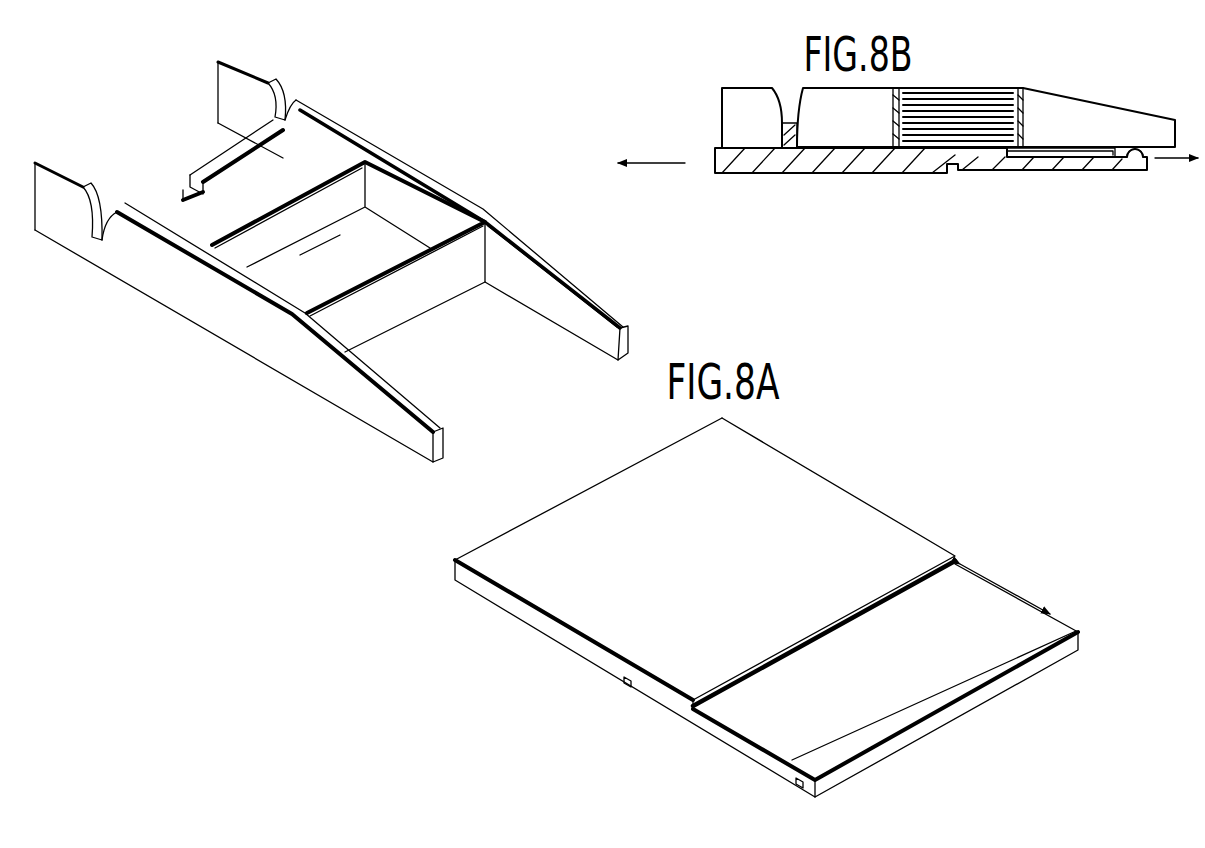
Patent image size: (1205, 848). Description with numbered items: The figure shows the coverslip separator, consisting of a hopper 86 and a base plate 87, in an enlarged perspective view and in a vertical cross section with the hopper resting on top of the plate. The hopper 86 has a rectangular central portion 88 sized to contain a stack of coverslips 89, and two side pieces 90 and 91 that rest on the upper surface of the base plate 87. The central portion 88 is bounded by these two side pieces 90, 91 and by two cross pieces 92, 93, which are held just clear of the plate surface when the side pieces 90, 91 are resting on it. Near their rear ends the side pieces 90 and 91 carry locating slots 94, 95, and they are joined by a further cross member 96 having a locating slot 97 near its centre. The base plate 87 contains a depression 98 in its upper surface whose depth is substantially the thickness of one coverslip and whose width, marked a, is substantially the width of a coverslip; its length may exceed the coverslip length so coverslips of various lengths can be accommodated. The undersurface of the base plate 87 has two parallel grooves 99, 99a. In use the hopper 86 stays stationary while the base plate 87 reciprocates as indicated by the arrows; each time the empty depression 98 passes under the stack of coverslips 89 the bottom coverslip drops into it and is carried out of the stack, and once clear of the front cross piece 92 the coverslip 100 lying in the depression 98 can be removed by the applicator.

In FIG. 8A, the hopper 86 is at (331, 262).
In FIG. 8B, the hopper 86 is at (948, 97).
In FIG. 8A, the base plate 87 is at (541, 643).
In FIG. 8B, the base plate 87 is at (1078, 164).
In FIG. 8A, the rectangular central portion 88 is at (380, 232).
In FIG. 8B, the stack of coverslips 89 is at (952, 110).
In FIG. 8A, the side piece 90 is at (568, 291).
In FIG. 8A, the side piece 91 is at (328, 384).
In FIG. 8A, the cross piece 92 is at (466, 248).
In FIG. 8A, the cross piece 93 is at (350, 182).
In FIG. 8A, the locating slot 94 is at (290, 103).
In FIG. 8A, the locating slot 95 is at (100, 207).
In FIG. 8A, the further cross member 96 is at (222, 158).
In FIG. 8A, the locating slot 97 is at (182, 188).
In FIG. 8A, the depression 98 is at (966, 614).
In FIG. 8B, the depression 98 is at (1136, 166).
In FIG. 8A, the groove 99 is at (626, 684).
In FIG. 8A, the groove 99a is at (792, 787).
In FIG. 8B, the coverslip 100 is at (1038, 159).
In FIG. 8A, the width of the depression a is at (1008, 582).